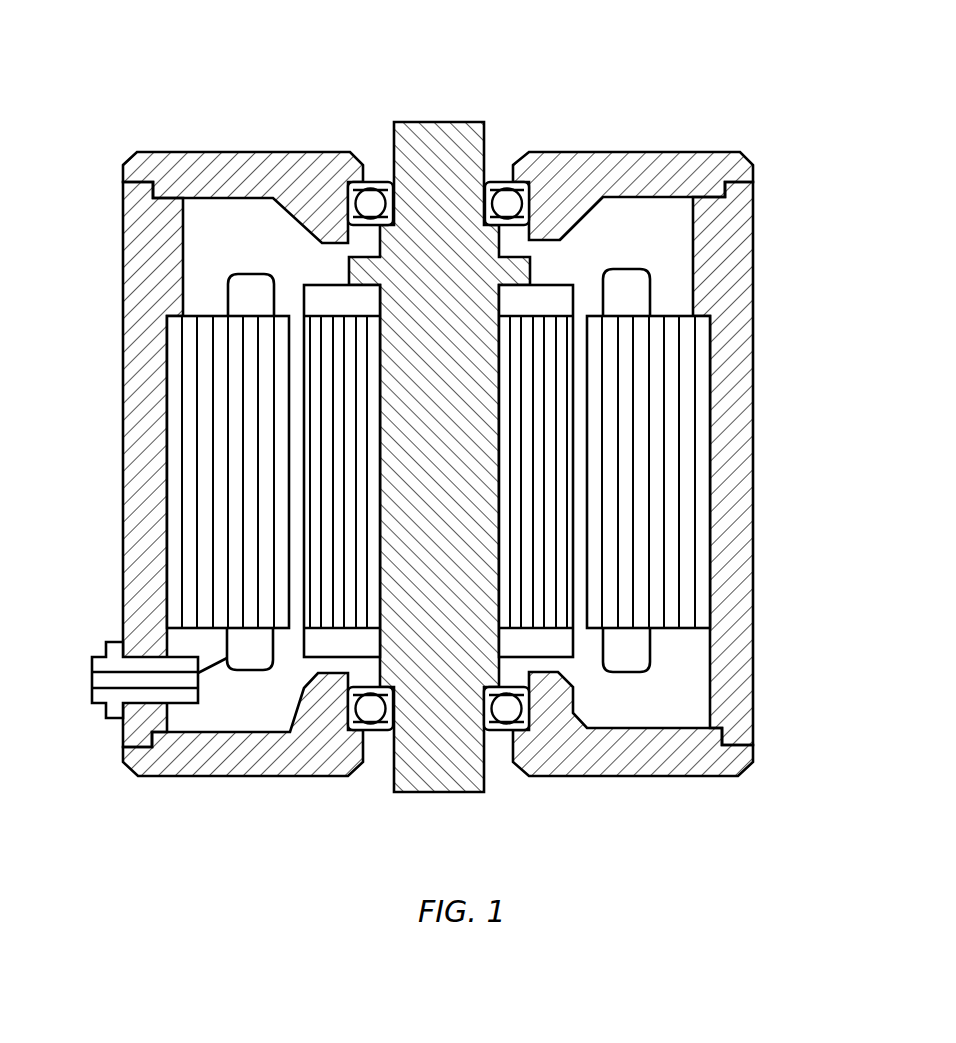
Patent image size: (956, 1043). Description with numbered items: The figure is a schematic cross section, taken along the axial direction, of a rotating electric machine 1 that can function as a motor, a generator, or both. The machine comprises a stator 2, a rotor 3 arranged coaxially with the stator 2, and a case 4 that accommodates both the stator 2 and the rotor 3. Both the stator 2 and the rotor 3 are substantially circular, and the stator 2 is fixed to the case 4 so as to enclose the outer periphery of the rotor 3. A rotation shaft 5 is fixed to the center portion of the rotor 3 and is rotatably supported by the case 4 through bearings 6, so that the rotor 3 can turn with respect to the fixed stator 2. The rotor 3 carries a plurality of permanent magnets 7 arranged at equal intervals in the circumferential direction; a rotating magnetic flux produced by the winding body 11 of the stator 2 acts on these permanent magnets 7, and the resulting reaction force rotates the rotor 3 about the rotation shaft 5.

The rotating electric machine 1 is at (619, 88).
The stator 2 is at (640, 485).
The rotor 3 is at (345, 335).
The case 4 is at (150, 411).
The rotation shaft 5 is at (431, 135).
The bearings 6 is at (493, 188).
The permanent magnets 7 is at (550, 399).
The winding body 11 is at (243, 296).